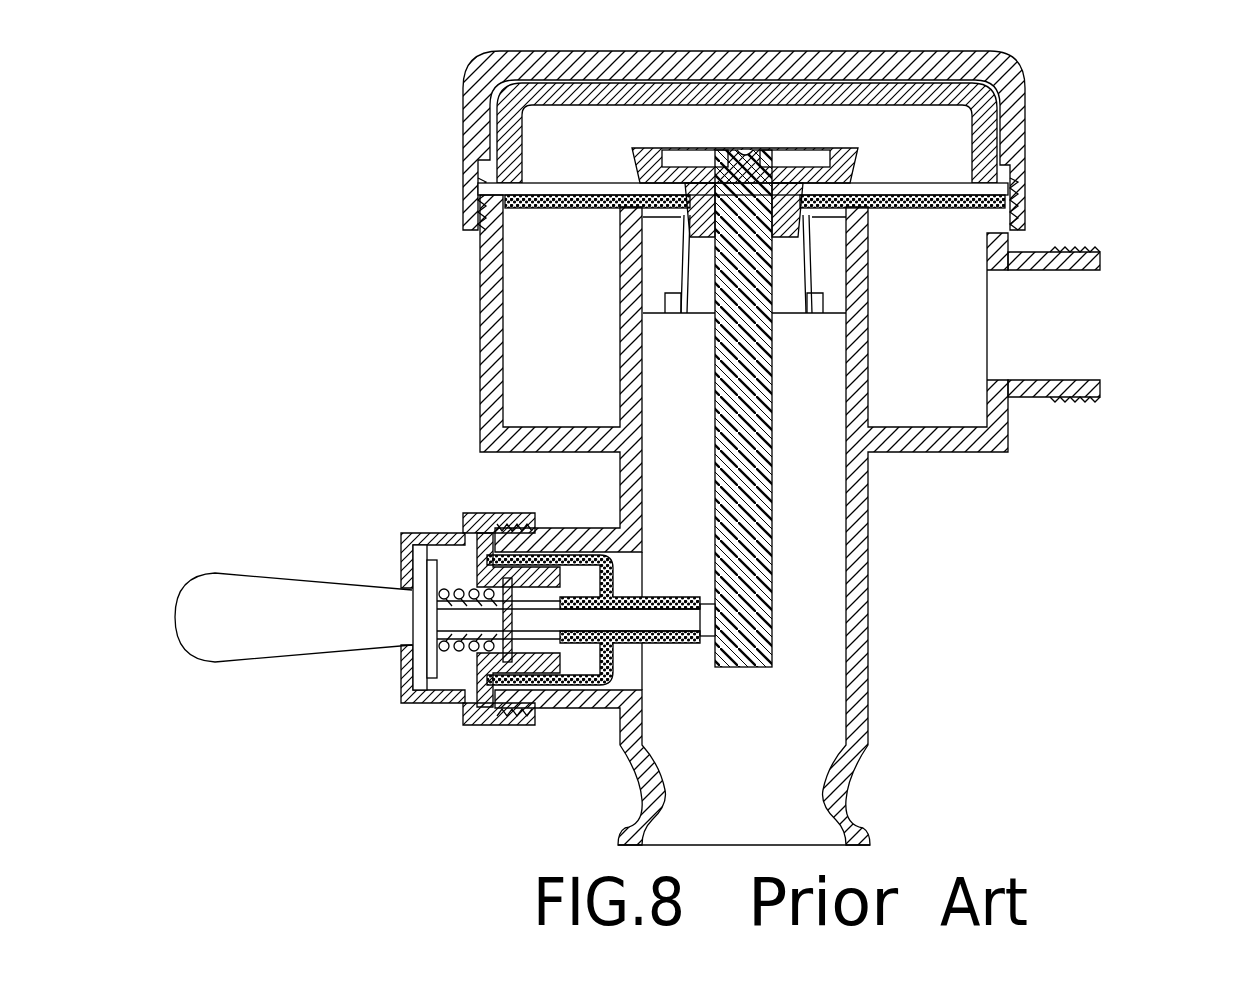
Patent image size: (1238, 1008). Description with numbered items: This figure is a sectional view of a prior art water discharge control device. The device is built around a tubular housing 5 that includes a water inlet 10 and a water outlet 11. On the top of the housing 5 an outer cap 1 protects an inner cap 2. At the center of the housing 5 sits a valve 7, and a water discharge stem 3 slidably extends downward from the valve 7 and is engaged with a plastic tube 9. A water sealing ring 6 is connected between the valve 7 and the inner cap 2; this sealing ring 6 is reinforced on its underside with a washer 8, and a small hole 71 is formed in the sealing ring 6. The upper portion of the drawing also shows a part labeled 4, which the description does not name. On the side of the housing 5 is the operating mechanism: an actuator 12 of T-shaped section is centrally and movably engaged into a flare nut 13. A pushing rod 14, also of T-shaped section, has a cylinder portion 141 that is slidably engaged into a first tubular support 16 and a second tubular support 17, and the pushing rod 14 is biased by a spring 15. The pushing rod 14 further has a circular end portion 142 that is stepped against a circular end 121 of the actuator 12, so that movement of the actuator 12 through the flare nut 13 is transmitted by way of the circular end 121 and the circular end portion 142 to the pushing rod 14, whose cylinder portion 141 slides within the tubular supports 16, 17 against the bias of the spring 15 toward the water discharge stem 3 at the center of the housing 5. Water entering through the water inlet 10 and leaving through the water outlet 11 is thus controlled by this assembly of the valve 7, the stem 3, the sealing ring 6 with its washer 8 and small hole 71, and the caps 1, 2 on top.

The outer cap 1 is at (1020, 129).
The inner cap 2 is at (985, 153).
The water discharge stem 3 is at (772, 588).
The valve disc 4 is at (690, 178).
The tubular housing 5 is at (860, 660).
The water sealing ring 6 is at (960, 200).
The valve 7 is at (790, 231).
The washer 8 is at (965, 212).
The plastic tube 9 is at (812, 265).
The water inlet 10 is at (1073, 324).
The water outlet 11 is at (757, 835).
The actuator 12 is at (272, 600).
The circular end 121 is at (418, 640).
The flare nut 13 is at (405, 533).
The pushing rod 14 is at (427, 665).
The cylinder portion 141 is at (502, 622).
The circular end portion 142 is at (428, 558).
The spring 15 is at (457, 650).
The first tubular support 16 is at (535, 690).
The second tubular support 17 is at (610, 695).
The small hole 71 is at (592, 207).